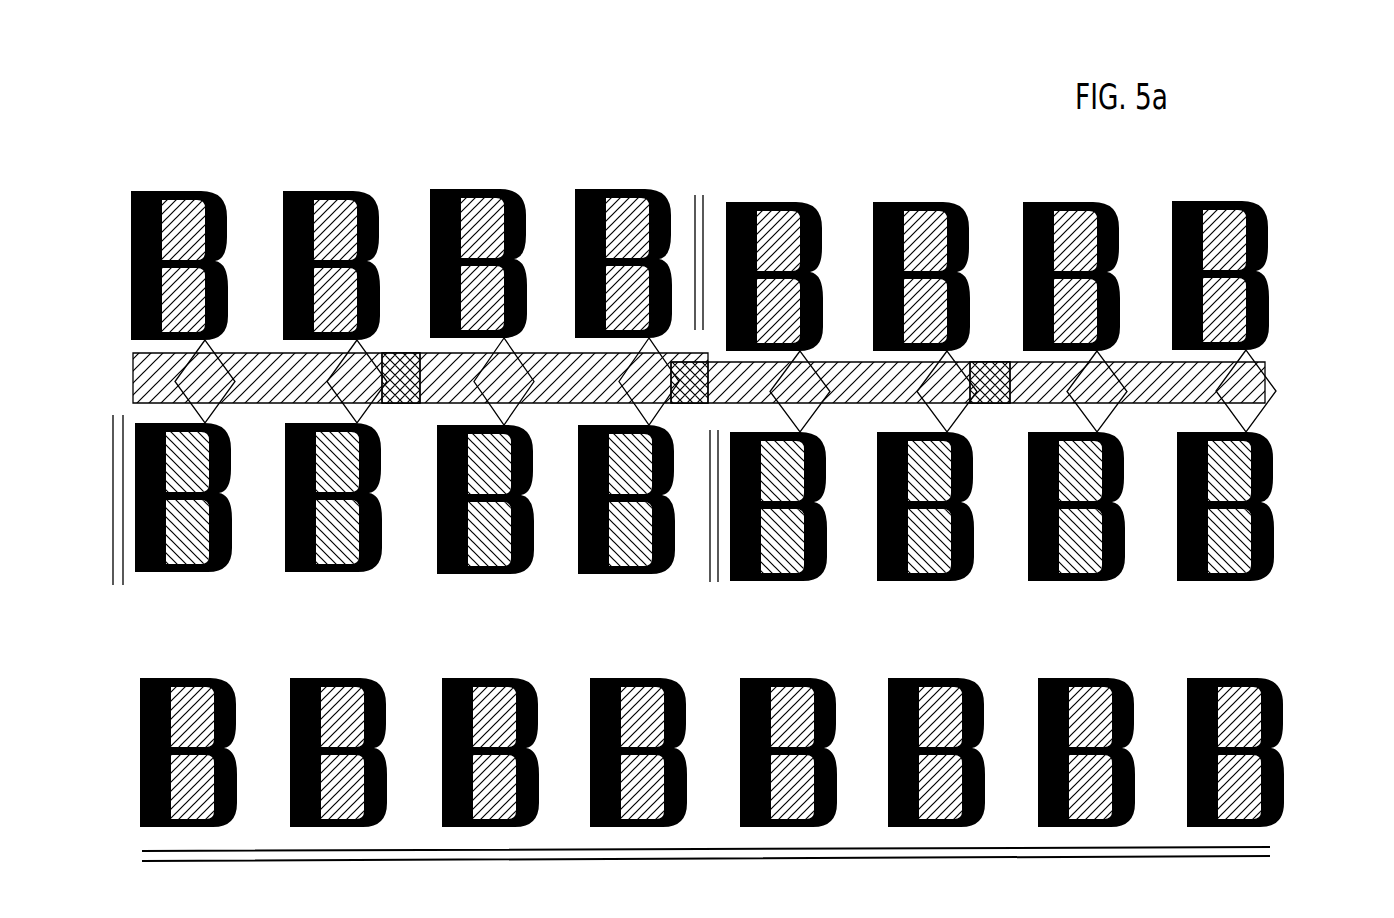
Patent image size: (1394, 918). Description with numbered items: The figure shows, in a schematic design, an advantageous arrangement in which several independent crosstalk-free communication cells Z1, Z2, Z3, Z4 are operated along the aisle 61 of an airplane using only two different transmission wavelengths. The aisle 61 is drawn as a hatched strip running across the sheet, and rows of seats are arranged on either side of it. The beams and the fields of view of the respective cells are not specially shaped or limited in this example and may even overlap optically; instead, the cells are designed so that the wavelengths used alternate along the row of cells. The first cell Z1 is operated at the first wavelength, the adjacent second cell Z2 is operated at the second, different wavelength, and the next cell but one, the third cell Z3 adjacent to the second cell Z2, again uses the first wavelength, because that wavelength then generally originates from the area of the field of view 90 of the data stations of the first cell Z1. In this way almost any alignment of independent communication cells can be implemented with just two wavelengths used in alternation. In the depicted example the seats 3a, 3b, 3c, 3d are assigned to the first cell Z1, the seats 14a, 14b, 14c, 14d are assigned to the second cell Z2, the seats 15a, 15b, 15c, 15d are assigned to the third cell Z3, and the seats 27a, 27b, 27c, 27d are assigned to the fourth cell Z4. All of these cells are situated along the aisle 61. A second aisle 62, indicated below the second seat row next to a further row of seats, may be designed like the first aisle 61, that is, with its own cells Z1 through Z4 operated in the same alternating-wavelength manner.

The seat 3a is at (190, 318).
The seat 3b is at (342, 318).
The seat 3c is at (195, 483).
The seat 3d is at (345, 483).
The seat 14a is at (487, 303).
The seat 14b is at (655, 268).
The seat 14c is at (487, 486).
The seat 14d is at (640, 481).
The seat 15a is at (797, 205).
The seat 15b is at (926, 232).
The seat 15c is at (785, 487).
The seat 15d is at (935, 487).
The seat 27a is at (1082, 216).
The seat 27b is at (1226, 240).
The seat 27c is at (1088, 487).
The seat 27d is at (1240, 487).
The aisle 61 is at (754, 378).
The second aisle 62 is at (1280, 626).
The field of view 90 is at (355, 365).
The first cell Z1 is at (222, 396).
The second cell Z2 is at (565, 394).
The third cell Z3 is at (849, 396).
The fourth cell Z4 is at (1149, 396).